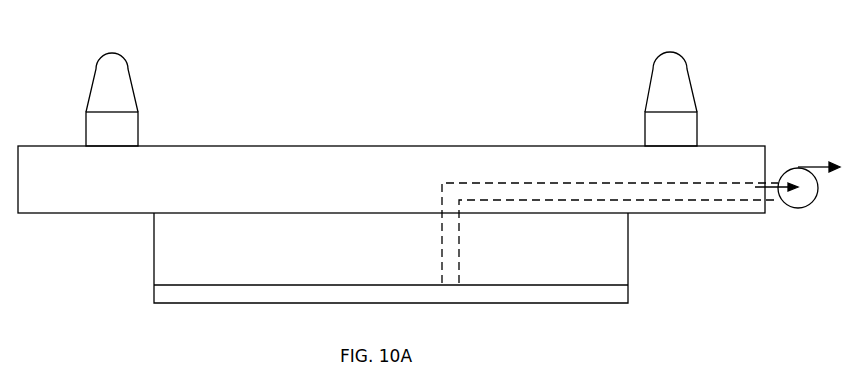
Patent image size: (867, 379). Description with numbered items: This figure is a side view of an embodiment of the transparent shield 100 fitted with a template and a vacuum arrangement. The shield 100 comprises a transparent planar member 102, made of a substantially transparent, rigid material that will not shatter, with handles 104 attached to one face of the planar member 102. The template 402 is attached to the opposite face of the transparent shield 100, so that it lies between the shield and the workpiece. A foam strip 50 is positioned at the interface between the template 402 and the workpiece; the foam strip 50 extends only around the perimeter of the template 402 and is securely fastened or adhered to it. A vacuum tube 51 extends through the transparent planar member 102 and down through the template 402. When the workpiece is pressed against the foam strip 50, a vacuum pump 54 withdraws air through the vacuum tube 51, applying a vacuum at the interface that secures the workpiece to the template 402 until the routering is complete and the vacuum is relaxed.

The transparent shield 100 is at (395, 120).
The transparent planar member 102 is at (222, 150).
The handles 104 is at (687, 67).
The foam strip 50 is at (154, 292).
The template 402 is at (612, 268).
The vacuum tube 51 is at (697, 200).
The vacuum pump 54 is at (798, 168).